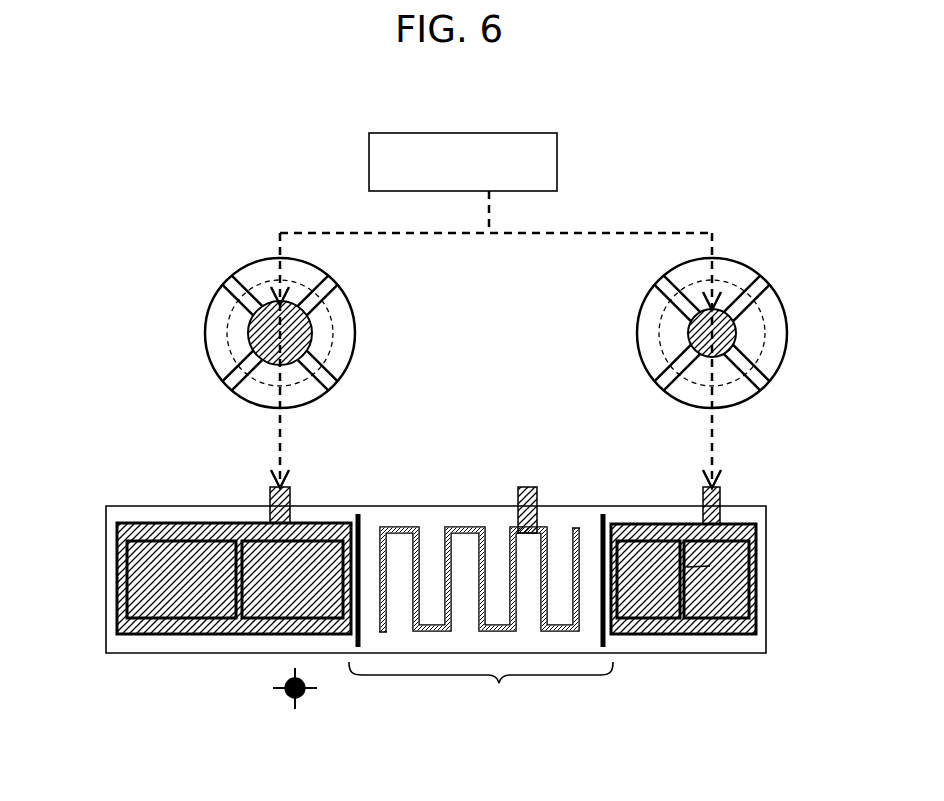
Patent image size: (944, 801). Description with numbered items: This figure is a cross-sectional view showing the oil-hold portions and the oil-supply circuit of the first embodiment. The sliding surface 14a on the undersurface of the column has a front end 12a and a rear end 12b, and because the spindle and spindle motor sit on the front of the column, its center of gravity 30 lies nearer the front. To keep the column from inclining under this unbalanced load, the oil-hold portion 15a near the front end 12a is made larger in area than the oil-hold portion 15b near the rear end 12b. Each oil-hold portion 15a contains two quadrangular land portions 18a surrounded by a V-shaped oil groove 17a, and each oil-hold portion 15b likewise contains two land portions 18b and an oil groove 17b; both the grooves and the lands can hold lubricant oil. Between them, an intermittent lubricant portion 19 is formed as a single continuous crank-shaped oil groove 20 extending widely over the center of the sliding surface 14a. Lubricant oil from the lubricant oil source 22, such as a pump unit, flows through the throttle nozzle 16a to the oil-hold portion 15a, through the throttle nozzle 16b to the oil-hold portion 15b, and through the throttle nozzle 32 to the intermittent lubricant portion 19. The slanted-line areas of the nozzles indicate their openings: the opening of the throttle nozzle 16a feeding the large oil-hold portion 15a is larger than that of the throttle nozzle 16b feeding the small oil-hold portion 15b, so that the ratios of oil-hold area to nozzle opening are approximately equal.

The front end 12a is at (106, 622).
The rear end 12b is at (766, 636).
The sliding surface 14a is at (138, 512).
The oil-hold portion 15a is at (218, 645).
The oil-hold portion 15b is at (698, 645).
The throttle nozzle 16a is at (290, 495).
The throttle nozzle 16b is at (722, 493).
The oil groove 17a is at (228, 562).
The oil groove 17b is at (753, 545).
The land portion 18a is at (170, 597).
The land portion 18b is at (643, 595).
The intermittent lubricant portion 19 is at (481, 689).
The oil groove 20 is at (373, 530).
The lubricant oil source 22 is at (557, 170).
The center of gravity 30 is at (307, 700).
The throttle nozzle 32 is at (518, 500).